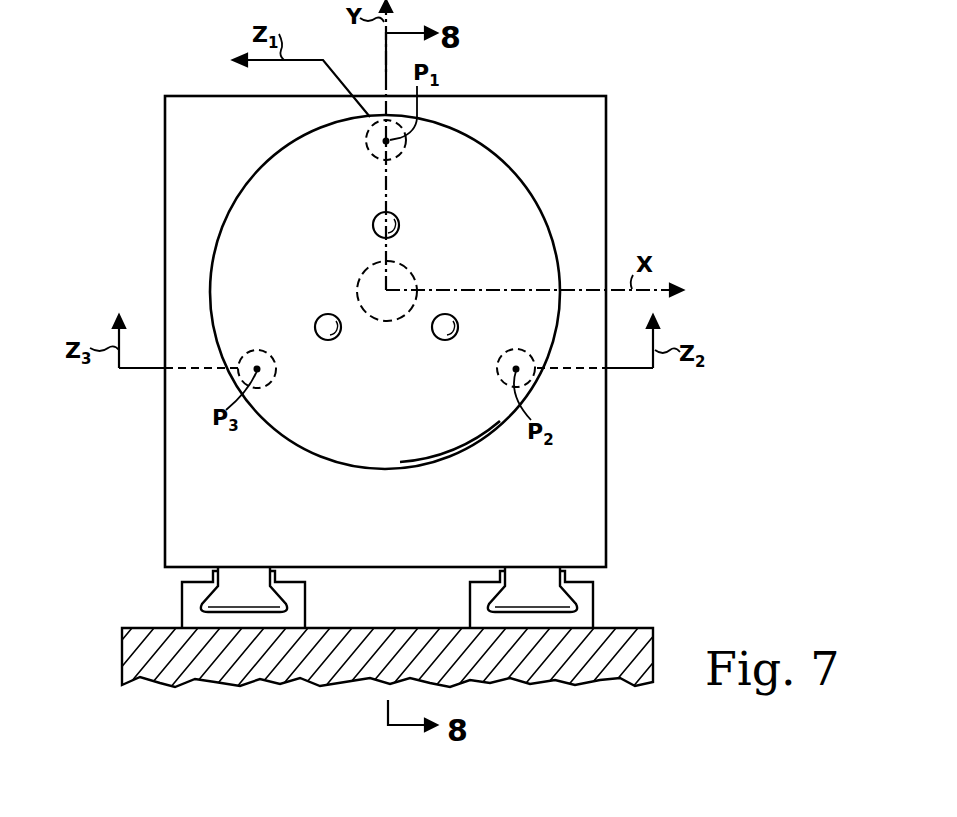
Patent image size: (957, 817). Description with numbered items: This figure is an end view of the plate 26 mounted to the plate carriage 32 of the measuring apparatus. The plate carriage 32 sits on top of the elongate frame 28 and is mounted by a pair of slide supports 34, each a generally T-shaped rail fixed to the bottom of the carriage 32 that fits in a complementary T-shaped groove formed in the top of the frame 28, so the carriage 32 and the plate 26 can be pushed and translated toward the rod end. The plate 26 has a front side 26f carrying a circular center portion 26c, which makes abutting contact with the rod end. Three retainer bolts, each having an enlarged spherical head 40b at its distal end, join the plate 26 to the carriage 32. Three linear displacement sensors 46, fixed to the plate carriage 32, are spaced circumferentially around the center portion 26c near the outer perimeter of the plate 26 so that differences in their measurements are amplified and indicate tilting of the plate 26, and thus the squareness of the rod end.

The plate 26 is at (514, 172).
The circular center portion 26c is at (408, 278).
The front side 26f is at (430, 448).
The elongate frame 28 is at (628, 628).
The plate carriage 32 is at (606, 150).
The slide supports 34 is at (217, 572).
The spherical head 40b is at (399, 222).
The linear displacement sensors 46 is at (367, 152).